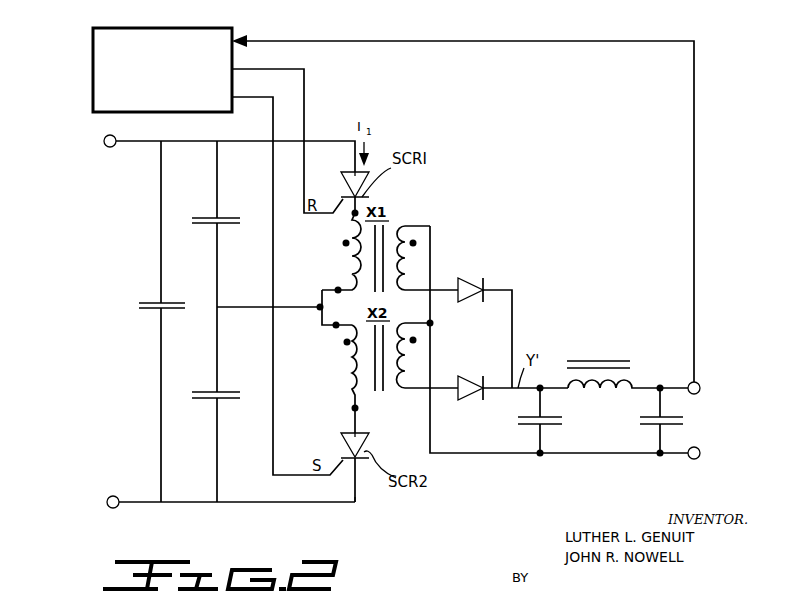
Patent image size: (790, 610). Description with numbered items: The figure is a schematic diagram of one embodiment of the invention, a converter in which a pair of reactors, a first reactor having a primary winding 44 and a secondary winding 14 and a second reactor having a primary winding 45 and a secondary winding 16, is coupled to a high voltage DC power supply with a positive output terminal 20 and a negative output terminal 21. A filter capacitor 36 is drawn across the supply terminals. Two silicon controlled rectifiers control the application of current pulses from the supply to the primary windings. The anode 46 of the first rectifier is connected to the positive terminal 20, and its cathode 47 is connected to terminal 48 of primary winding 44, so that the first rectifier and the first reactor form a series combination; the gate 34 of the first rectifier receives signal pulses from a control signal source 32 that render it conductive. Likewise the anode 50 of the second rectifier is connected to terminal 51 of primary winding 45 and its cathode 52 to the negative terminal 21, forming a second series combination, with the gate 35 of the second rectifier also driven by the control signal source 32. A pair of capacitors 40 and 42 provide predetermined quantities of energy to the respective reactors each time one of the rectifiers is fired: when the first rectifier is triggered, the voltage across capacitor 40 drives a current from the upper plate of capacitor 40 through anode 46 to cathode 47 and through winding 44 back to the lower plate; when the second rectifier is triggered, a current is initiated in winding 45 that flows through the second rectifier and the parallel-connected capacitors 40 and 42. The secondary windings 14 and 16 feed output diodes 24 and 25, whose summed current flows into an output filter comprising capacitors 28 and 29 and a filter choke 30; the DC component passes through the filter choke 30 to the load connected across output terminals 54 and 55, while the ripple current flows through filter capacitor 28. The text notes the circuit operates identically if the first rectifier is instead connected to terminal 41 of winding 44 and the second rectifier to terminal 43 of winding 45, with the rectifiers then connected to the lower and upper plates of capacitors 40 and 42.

The control signal source 32 is at (93, 48).
The positive output terminal 20 is at (108, 147).
The negative output terminal 21 is at (113, 496).
The input filter capacitor 36 is at (139, 304).
The capacitor 40 is at (240, 224).
The capacitor 42 is at (240, 399).
The gate 34 is at (341, 197).
The anode 46 is at (360, 190).
The cathode 47 is at (352, 214).
The primary winding 44 is at (343, 263).
The terminal 48 is at (343, 244).
The terminal 41 is at (331, 289).
The terminal 43 is at (335, 326).
The primary winding 45 is at (347, 357).
The terminal 51 is at (351, 408).
The gate 35 is at (340, 461).
The anode 50 is at (364, 433).
The cathode 52 is at (356, 501).
The secondary winding 14 is at (431, 258).
The secondary winding 16 is at (402, 358).
The output diode 24 is at (466, 286).
The output diode 25 is at (463, 381).
The filter capacitor 28 is at (518, 420).
The capacitor 29 is at (640, 420).
The filter choke 30 is at (632, 384).
The output terminal 54 is at (700, 383).
The output terminal 55 is at (699, 458).